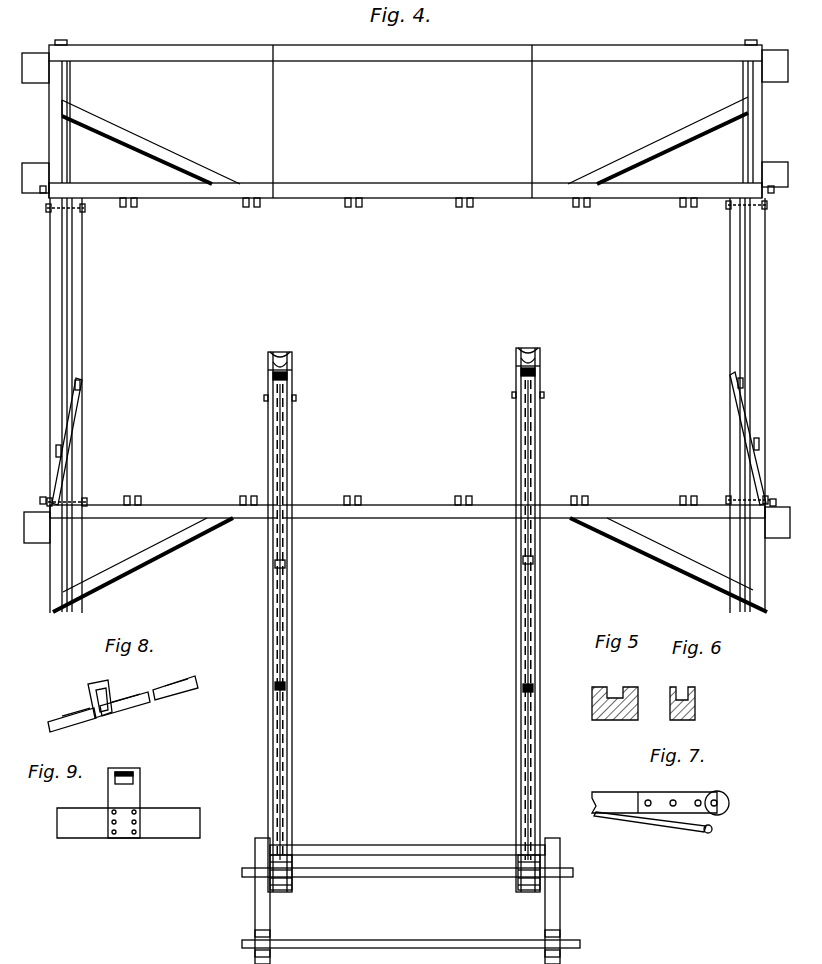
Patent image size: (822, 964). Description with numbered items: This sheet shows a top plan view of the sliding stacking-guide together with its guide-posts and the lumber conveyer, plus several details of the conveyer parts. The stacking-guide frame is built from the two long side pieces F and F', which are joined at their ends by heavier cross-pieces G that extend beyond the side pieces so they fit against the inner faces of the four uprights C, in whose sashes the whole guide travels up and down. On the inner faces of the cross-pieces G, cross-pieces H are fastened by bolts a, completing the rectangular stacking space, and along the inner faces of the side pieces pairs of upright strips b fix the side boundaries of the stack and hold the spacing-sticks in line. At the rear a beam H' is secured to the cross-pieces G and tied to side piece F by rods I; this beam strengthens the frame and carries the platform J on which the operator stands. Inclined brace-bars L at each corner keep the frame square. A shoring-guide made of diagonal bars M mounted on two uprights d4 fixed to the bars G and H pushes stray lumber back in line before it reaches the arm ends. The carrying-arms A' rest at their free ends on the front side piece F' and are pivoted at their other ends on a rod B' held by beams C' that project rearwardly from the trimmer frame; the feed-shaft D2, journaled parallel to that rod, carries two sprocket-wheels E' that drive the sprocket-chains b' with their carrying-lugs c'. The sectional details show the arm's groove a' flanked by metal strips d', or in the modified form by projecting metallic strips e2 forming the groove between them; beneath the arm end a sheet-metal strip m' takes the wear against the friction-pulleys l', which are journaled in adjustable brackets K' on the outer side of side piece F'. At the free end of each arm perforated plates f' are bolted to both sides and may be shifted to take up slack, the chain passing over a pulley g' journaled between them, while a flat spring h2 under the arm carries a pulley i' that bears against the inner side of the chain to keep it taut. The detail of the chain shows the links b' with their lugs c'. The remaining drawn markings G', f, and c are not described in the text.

In FIG. 4, the beam H' is at (405, 129).
In FIG. 4, the beams C' is at (301, 508).
In FIG. 4, the uprights C is at (415, 307).
In FIG. 4, the pin c is at (419, 347).
In FIG. 4, the bolts a is at (415, 348).
In FIG. 4, the upright strips b is at (408, 351).
In FIG. 4, the side piece F is at (405, 207).
In FIG. 4, the front side piece F' is at (407, 525).
In FIG. 9, the front side piece F' is at (128, 836).
In FIG. 4, the platform J is at (402, 121).
In FIG. 4, the rods I is at (70, 152).
In FIG. 4, the inclined brace-bars L is at (165, 143).
In FIG. 4, the cross-piece G is at (407, 405).
In FIG. 4, the cross-pieces H is at (406, 405).
In FIG. 4, the bars M is at (80, 418).
In FIG. 4, the uprights d4 is at (80, 384).
In FIG. 4, the chain guide tower G' is at (404, 608).
In FIG. 7, the pulleys g' is at (728, 803).
In FIG. 4, the perforated metal plates f' is at (291, 374).
In FIG. 7, the perforated metal plates f' is at (681, 787).
In FIG. 4, the pin f is at (539, 376).
In FIG. 4, the carrying-arms A' is at (404, 620).
In FIG. 5, the carrying-arms A' is at (605, 703).
In FIG. 6, the carrying-arms A' is at (672, 703).
In FIG. 7, the carrying-arms A' is at (654, 791).
In FIG. 4, the carrying-lugs c' is at (417, 624).
In FIG. 8, the carrying-lugs c' is at (90, 691).
In FIG. 4, the sprocket-chains b' is at (403, 721).
In FIG. 8, the sprocket-chains b' is at (123, 704).
In FIG. 4, the rod B' is at (407, 838).
In FIG. 4, the feed-shaft D2 is at (355, 879).
In FIG. 4, the sprocket-wheels E' is at (405, 881).
In FIG. 5, the metal strips d' is at (614, 674).
In FIG. 5, the groove a' is at (613, 679).
In FIG. 6, the groove a' is at (684, 680).
In FIG. 5, the sheet-metal strips m' is at (599, 731).
In FIG. 6, the metallic plates or strips e2 is at (674, 687).
In FIG. 7, the flat spring h2 is at (650, 822).
In FIG. 7, the pulley i' is at (716, 839).
In FIG. 9, the brackets K' is at (141, 803).
In FIG. 9, the friction-pulleys l' is at (145, 764).